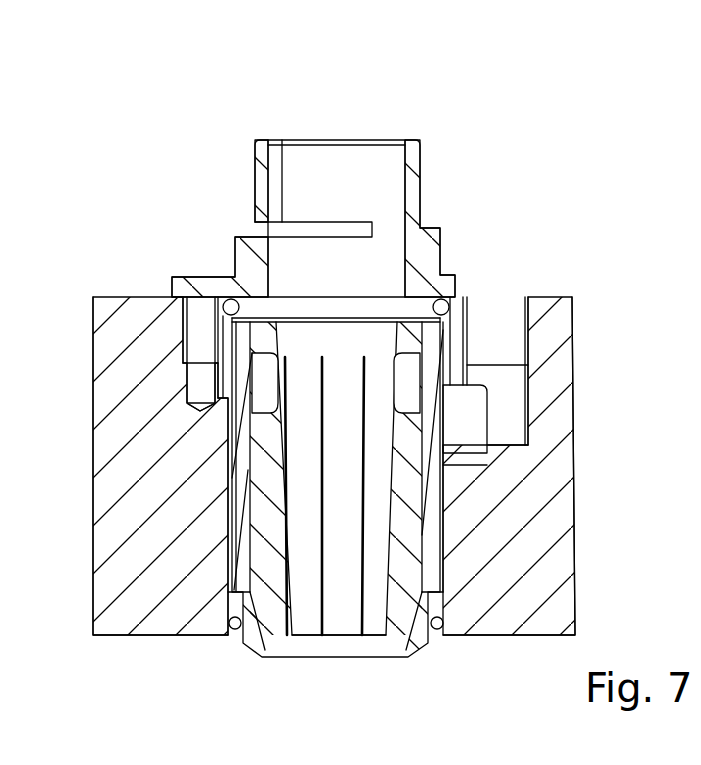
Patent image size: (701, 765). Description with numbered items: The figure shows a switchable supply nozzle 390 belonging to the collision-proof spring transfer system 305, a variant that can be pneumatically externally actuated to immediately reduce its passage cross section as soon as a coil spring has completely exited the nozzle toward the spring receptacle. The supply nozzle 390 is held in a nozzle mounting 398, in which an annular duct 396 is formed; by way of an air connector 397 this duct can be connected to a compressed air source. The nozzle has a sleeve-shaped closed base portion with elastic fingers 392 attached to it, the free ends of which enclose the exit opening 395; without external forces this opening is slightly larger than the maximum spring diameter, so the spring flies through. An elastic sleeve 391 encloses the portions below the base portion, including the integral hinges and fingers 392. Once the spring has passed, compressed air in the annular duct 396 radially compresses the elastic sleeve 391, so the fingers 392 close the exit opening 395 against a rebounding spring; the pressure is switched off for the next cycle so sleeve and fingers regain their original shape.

The spring transfer system 305 is at (172, 130).
The supply nozzle 390 is at (512, 193).
The elastic sleeve 391 is at (336, 467).
The elastic fingers 392 is at (343, 565).
The exit opening 395 is at (376, 664).
The annular duct 396 is at (513, 425).
The air connector 397 is at (507, 303).
The nozzle mounting 398 is at (550, 522).